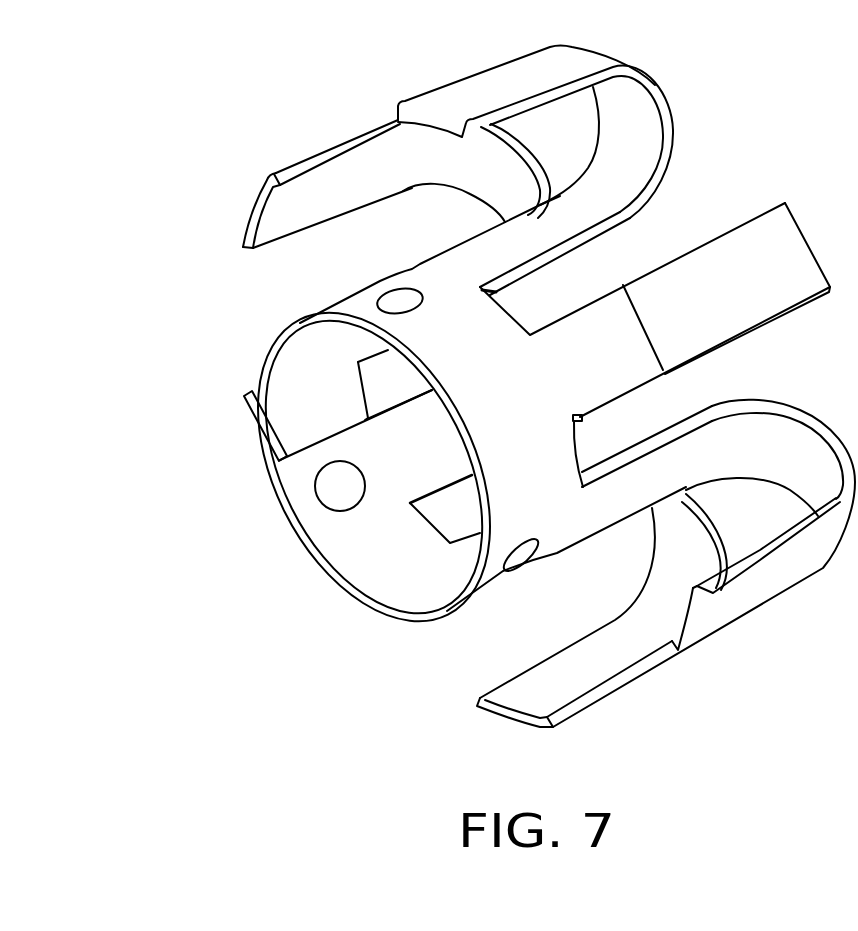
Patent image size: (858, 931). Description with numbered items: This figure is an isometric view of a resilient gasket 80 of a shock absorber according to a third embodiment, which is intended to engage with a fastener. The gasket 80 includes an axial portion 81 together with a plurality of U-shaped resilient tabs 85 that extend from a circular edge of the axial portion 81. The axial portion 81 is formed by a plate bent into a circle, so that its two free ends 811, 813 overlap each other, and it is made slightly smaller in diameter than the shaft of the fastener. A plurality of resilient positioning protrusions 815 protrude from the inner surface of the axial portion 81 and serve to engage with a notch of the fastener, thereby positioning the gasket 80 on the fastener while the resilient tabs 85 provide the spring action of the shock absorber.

The resilient gasket 80 is at (258, 332).
The axial portion 81 is at (363, 561).
The free end 811 is at (293, 432).
The free end 813 is at (244, 396).
The resilient positioning protrusion 815 is at (337, 487).
The U-shaped resilient tab 85 is at (327, 187).